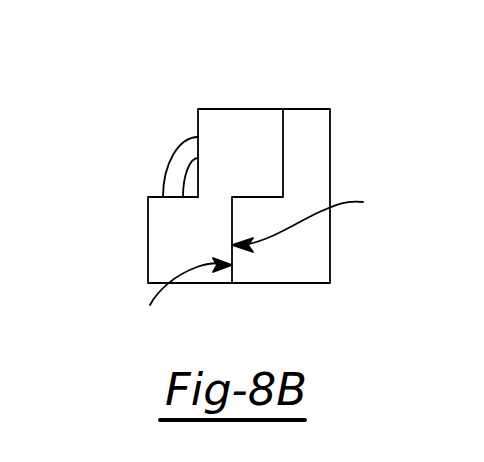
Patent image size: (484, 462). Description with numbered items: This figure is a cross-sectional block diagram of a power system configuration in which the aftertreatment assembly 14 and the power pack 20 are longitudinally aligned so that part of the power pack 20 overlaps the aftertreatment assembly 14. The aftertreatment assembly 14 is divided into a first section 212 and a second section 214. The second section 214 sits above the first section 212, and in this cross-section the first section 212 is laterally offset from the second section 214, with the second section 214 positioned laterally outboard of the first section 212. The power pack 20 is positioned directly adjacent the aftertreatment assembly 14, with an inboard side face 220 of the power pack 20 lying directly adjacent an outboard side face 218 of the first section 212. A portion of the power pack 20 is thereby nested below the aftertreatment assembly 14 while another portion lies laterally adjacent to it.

The aftertreatment assembly 14 is at (207, 117).
The second section 214 is at (248, 117).
The first section 212 is at (158, 248).
The outboard side face 218 is at (315, 222).
The power pack 20 is at (328, 265).
The inboard side face 220 is at (180, 303).